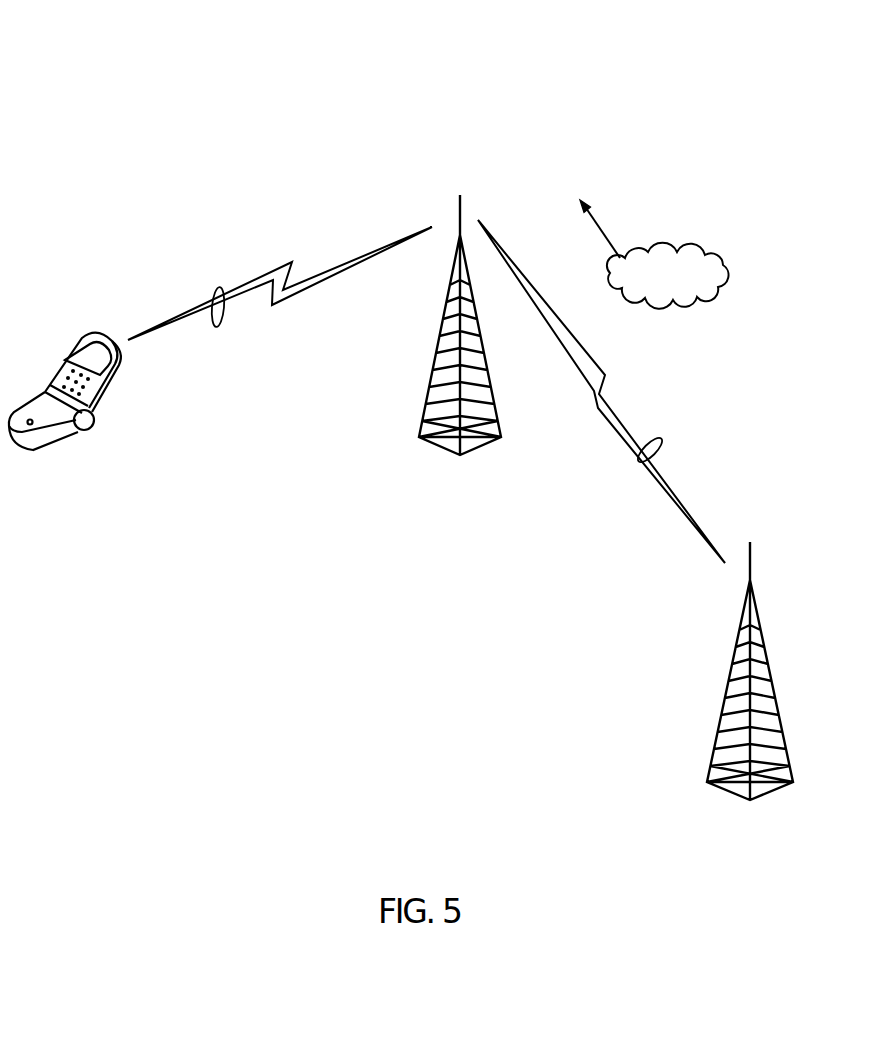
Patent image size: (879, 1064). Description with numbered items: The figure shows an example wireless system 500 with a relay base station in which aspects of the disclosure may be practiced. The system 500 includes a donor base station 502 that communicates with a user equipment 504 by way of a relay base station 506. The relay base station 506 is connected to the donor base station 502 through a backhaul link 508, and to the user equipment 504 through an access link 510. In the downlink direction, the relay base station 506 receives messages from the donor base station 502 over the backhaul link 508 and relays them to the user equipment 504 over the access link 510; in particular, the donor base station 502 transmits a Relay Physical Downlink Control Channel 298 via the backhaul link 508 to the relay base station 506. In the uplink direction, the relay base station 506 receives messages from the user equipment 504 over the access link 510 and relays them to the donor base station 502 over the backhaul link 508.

The wireless system 500 is at (92, 80).
The donor base station 502 is at (776, 690).
The user equipment 504 is at (62, 355).
The relay base station 506 is at (438, 346).
The backhaul link 508 is at (644, 464).
The access link 510 is at (218, 326).
The Relay Physical Downlink Control Channel (R-PDCCH) 298 is at (667, 240).